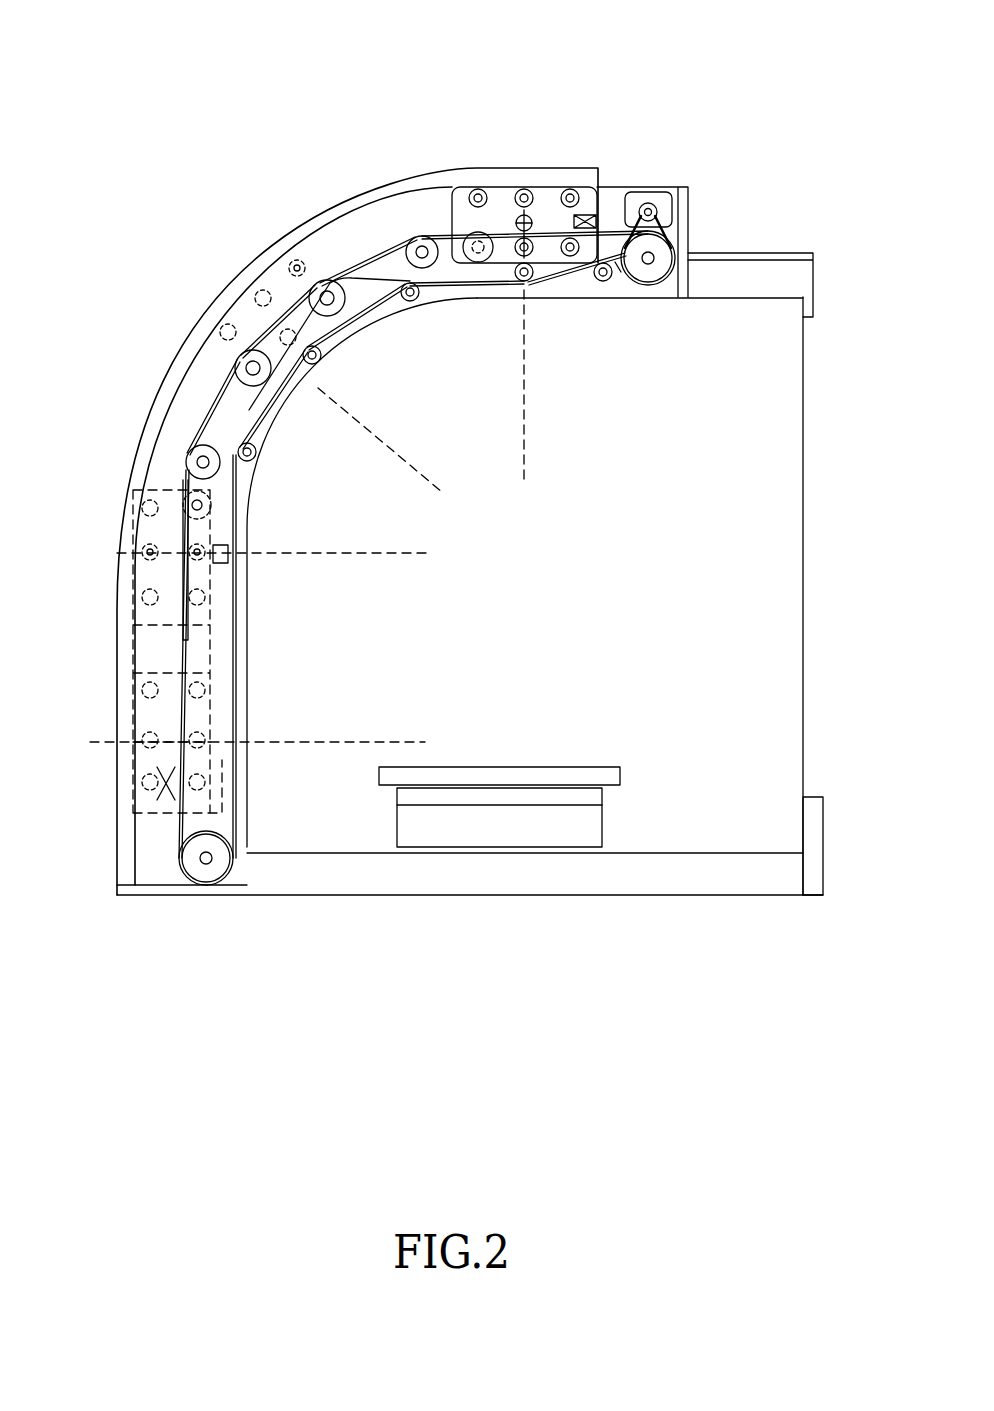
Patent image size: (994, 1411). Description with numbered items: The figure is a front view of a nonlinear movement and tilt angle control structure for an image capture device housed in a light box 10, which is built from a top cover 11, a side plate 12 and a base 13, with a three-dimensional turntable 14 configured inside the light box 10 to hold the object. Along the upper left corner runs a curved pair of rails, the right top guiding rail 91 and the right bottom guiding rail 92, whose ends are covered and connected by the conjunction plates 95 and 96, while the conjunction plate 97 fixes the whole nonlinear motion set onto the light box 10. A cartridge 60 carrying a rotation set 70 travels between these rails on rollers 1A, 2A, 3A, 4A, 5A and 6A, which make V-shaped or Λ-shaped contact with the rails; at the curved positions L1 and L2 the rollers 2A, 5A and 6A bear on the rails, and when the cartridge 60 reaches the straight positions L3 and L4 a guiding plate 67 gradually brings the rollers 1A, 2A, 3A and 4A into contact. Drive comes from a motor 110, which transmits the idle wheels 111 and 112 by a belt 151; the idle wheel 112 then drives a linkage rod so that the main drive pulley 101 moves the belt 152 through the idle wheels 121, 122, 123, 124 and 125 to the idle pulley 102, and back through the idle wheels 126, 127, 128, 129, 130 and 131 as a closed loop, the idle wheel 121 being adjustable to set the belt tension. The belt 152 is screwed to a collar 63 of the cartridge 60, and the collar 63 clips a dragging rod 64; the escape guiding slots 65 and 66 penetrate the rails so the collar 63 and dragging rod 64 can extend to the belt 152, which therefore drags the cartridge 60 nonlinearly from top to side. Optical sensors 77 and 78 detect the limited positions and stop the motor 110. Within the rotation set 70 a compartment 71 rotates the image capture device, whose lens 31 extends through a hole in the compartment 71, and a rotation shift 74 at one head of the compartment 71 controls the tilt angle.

The light box 10 is at (795, 300).
The top cover 11 is at (815, 268).
The side plate 12 is at (803, 372).
The base 13 is at (820, 825).
The 3D-turntable 14 is at (602, 815).
The cartridge 60 is at (213, 267).
The collar 63 is at (517, 222).
The dragging rod 64 is at (560, 232).
The escape guiding slot 65 is at (600, 222).
The escape guiding slot 66 is at (167, 793).
The guiding plate 67 is at (158, 612).
The rotation set 70 is at (257, 303).
The compartment 71 is at (235, 348).
The rotation shift 74 is at (300, 255).
The optical sensor 77 is at (510, 222).
The optical sensor 78 is at (157, 733).
The right top guiding rail 91 is at (133, 653).
The right bottom guiding rail 92 is at (323, 240).
The conjunction plate 95 is at (685, 200).
The conjunction plate 96 is at (143, 890).
The conjunction plate 97 is at (240, 878).
The main drive pulley 101 is at (640, 283).
The idle pulley 102 is at (227, 847).
The motor 110 is at (652, 205).
The idle wheel 111 is at (645, 195).
The idle wheel 112 is at (652, 287).
The idle wheel 121 is at (620, 290).
The idle wheel 122 is at (525, 288).
The idle wheel 123 is at (410, 305).
The idle wheel 124 is at (305, 385).
The idle wheel 125 is at (255, 460).
The idle wheel 126 is at (210, 510).
The idle wheel 127 is at (197, 460).
The idle wheel 128 is at (237, 377).
The idle wheel 129 is at (287, 280).
The idle wheel 130 is at (322, 282).
The idle wheel 131 is at (497, 260).
The belt 151 is at (678, 222).
The belt 152 is at (603, 283).
The lens 31 is at (227, 570).
The roller 1A is at (585, 260).
The roller 2A is at (517, 253).
The roller 3A is at (480, 262).
The roller 4A is at (524, 190).
The roller 5A is at (478, 190).
The roller 6A is at (570, 190).
The curved position L1 is at (531, 409).
The curved position L2 is at (397, 458).
The straight-section position L3 is at (293, 553).
The straight-section position L4 is at (279, 740).